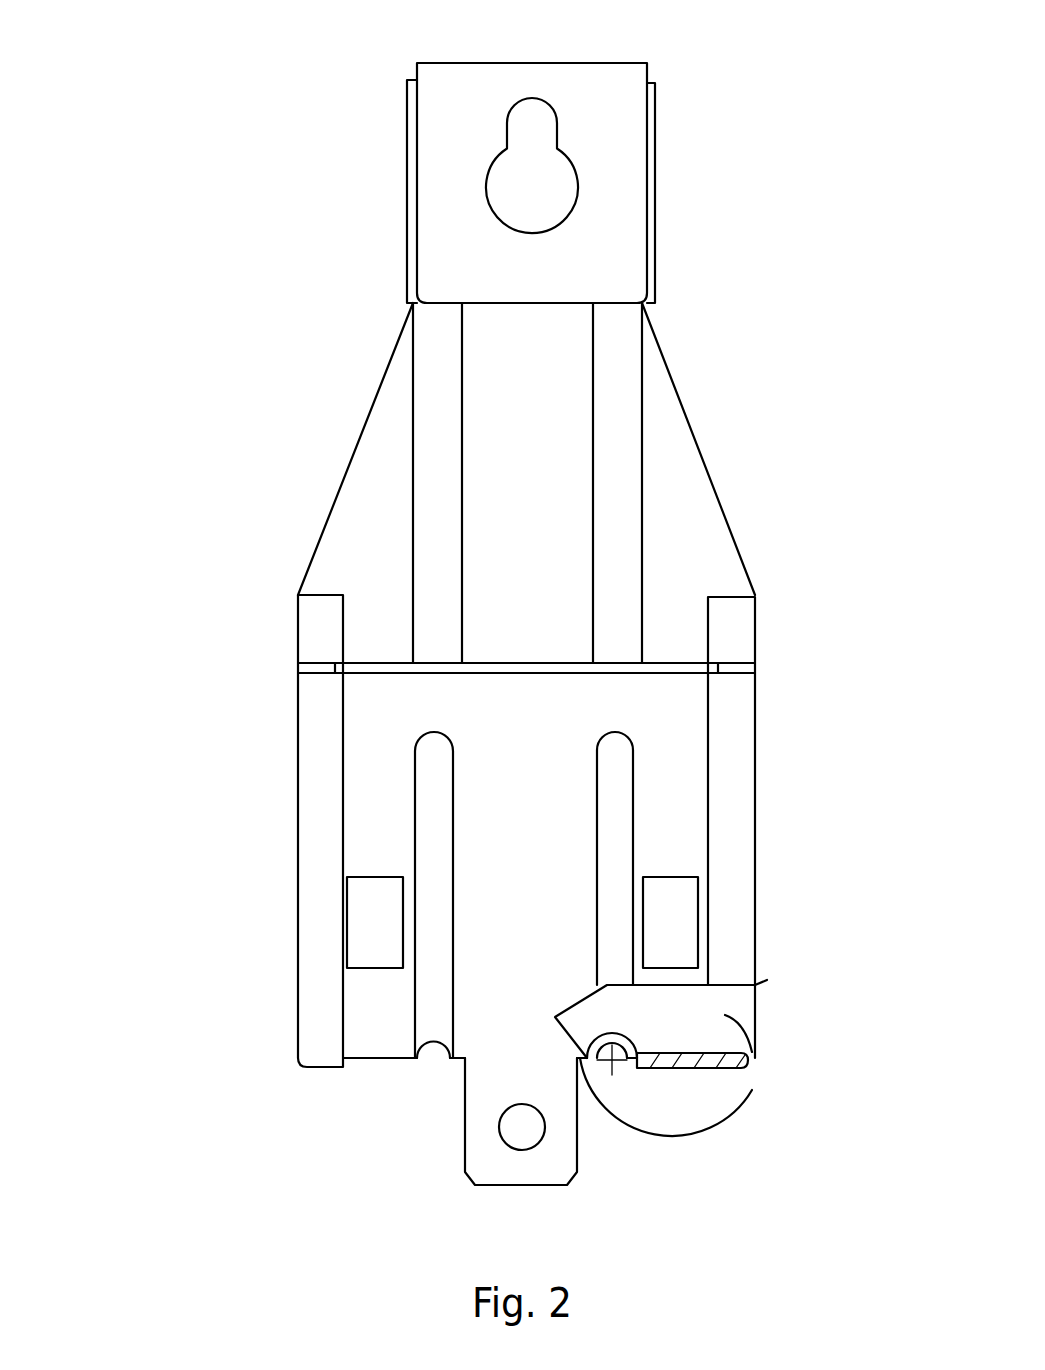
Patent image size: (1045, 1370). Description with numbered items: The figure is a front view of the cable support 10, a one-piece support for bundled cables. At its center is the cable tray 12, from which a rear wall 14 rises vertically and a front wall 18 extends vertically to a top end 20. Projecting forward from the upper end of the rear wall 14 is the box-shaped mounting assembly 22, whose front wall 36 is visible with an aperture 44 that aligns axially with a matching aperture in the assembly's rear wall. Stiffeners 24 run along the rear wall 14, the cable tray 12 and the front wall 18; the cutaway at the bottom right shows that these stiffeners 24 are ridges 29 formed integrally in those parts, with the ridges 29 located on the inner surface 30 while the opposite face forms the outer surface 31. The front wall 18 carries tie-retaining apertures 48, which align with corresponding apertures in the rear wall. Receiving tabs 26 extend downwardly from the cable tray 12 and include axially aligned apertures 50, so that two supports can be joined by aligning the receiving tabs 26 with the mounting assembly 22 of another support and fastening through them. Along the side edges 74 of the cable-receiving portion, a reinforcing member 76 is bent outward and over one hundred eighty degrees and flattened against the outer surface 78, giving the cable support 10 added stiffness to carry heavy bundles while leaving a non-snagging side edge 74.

The cable support 10 is at (252, 302).
The cable tray 12 is at (695, 1058).
The rear wall 14 is at (700, 450).
The front wall 18 is at (677, 725).
The top end 20 is at (668, 663).
The box-shaped mounting assembly 22 is at (649, 65).
The stiffeners 24 is at (454, 417).
The receiving tabs 26 is at (505, 1173).
The ridges 29 is at (612, 1040).
The inner surface 30 is at (544, 557).
The outer surface 31 is at (532, 863).
The front wall 36 is at (481, 138).
The apertures 44 is at (532, 187).
The tie-retaining apertures 48 is at (668, 920).
The apertures 50 is at (522, 1127).
The side edges 74 is at (297, 828).
The reinforcing member 76 is at (337, 775).
The outer surface 78 is at (373, 1088).